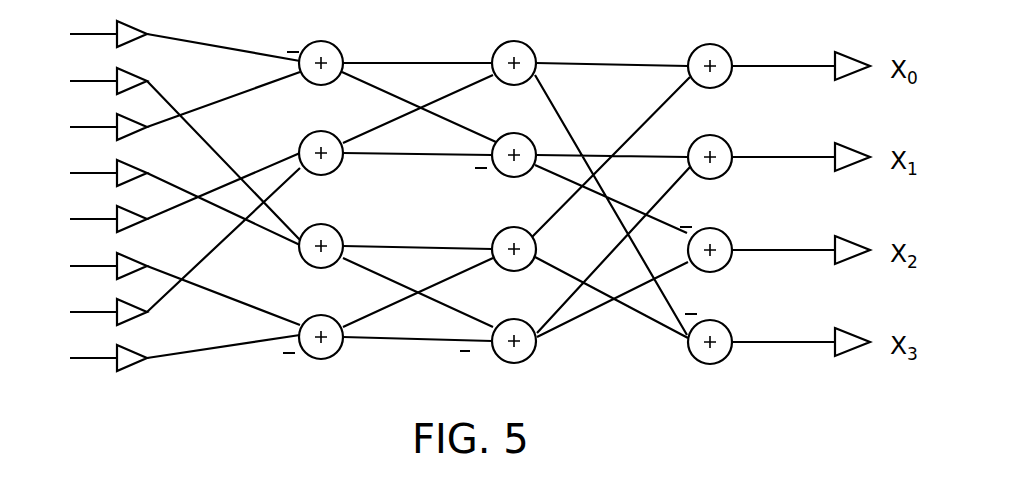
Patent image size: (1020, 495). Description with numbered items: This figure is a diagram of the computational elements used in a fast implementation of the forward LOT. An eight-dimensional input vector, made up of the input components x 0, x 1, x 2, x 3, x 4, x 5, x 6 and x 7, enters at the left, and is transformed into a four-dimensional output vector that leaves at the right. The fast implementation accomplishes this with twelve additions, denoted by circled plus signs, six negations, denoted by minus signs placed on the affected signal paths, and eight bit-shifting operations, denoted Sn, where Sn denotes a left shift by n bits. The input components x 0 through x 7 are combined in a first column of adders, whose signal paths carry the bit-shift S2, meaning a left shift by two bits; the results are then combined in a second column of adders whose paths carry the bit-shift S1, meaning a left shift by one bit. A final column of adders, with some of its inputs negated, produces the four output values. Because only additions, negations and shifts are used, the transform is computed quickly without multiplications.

The first input vector component 0 is at (95, 33).
The second input vector component 1 is at (95, 80).
The third input vector component 2 is at (95, 126).
The fourth input vector component 3 is at (95, 172).
The fifth input vector component 4 is at (95, 218).
The sixth input vector component 5 is at (95, 265).
The seventh input vector component 6 is at (95, 311).
The eighth input vector component 7 is at (95, 357).
The left shift by two bits operation S2 is at (310, 200).
The left shift by one bit operation S1 is at (498, 202).